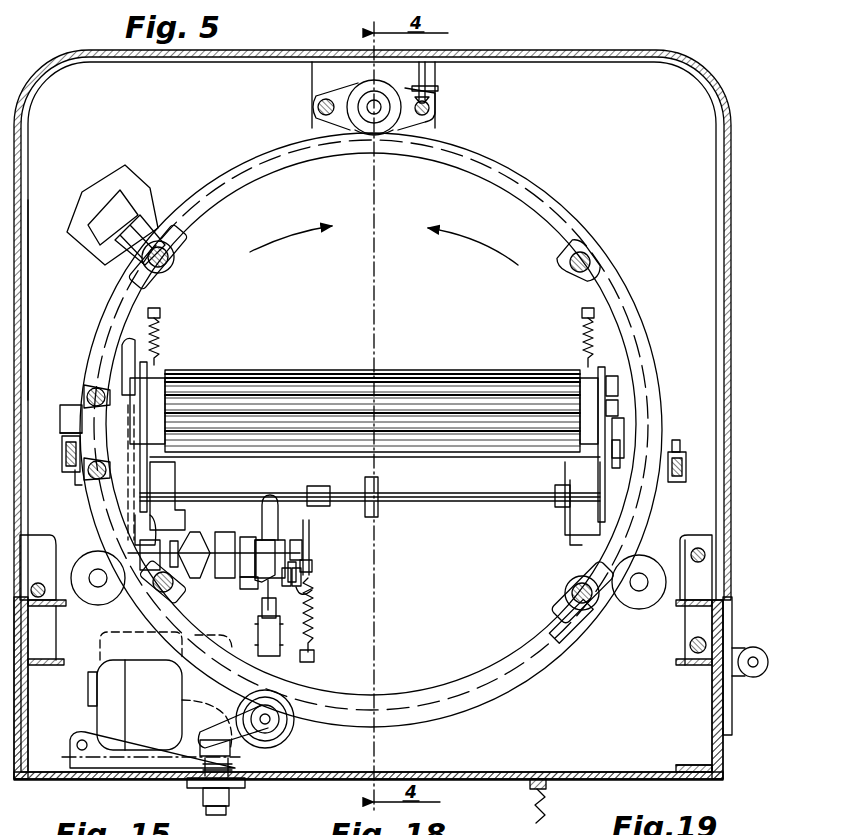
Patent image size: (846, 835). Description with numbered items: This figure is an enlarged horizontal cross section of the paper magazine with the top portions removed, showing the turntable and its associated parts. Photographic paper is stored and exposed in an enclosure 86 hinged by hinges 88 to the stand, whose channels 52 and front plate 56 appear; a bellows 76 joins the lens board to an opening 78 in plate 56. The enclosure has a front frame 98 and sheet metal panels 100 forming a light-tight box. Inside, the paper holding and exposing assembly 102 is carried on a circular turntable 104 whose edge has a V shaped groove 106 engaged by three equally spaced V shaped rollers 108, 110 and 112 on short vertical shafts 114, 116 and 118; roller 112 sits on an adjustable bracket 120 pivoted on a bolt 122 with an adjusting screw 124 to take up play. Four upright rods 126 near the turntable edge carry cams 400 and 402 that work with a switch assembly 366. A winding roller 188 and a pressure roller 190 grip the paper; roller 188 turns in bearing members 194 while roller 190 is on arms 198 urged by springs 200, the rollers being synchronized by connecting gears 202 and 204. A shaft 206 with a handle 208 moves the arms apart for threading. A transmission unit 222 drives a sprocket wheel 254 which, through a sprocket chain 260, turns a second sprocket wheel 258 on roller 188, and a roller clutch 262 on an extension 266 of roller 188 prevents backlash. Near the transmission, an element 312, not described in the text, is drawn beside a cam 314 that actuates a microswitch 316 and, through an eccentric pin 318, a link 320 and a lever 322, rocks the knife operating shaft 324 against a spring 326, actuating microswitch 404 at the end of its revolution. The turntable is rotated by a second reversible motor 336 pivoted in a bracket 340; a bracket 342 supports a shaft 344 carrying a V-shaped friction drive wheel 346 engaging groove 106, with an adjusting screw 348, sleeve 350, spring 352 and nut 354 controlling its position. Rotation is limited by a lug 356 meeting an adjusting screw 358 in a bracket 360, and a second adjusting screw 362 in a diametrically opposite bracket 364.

The channels 52 is at (22, 700).
The front plate 56 is at (176, 780).
The bellows 76 is at (521, 801).
The opening 78 is at (312, 780).
The enclosure 86 is at (745, 330).
The hinges 88 is at (753, 658).
The front frame 98 is at (60, 605).
The sheet metal panels 100 is at (29, 290).
The paper holding and exposing assembly 102 is at (596, 206).
The turntable 104 is at (492, 219).
The V shaped groove 106 is at (473, 693).
The V shaped roller 108 is at (95, 575).
The V shaped roller 110 is at (640, 572).
The V shaped roller 112 is at (395, 130).
The vertical shaft 114 is at (100, 583).
The vertical shaft 116 is at (638, 586).
The vertical shaft 118 is at (368, 100).
The adjustable bracket 120 is at (322, 102).
The bolt 122 is at (318, 110).
The adjusting screw 124 is at (428, 80).
The rods 126 is at (168, 258).
The winding roller 188 is at (408, 442).
The pressure roller 190 is at (448, 410).
The bearing members 194 is at (150, 452).
The arms 198 is at (148, 392).
The springs 200 is at (160, 338).
The connecting gear 202 is at (605, 402).
The connecting gear 204 is at (612, 430).
The shaft 206 is at (286, 370).
The handle 208 is at (126, 345).
The transmission unit 222 is at (232, 598).
The sprocket wheel 254 is at (162, 515).
The second sprocket wheel 258 is at (125, 415).
The sprocket chain 260 is at (128, 508).
The roller clutch 262 is at (612, 445).
The extension 266 is at (562, 467).
The slide block 312 is at (260, 636).
The cam 314 is at (295, 545).
The microswitch 316 is at (286, 580).
The eccentric pin 318 is at (308, 565).
The link 320 is at (302, 548).
The lever 322 is at (320, 494).
The knife operating shaft 324 is at (458, 498).
The spring 326 is at (316, 625).
The second reversible motor 336 is at (105, 684).
The bracket 340 is at (84, 740).
The bracket 342 is at (270, 725).
The shaft 344 is at (270, 712).
The V-shaped friction drive wheel 346 is at (290, 728).
The adjusting screw 348 is at (228, 812).
The sleeve 350 is at (228, 798).
The spring 352 is at (220, 768).
The nut 354 is at (215, 725).
The lug 356 is at (68, 430).
The adjusting screw 358 is at (55, 445).
The bracket 360 is at (75, 470).
The second adjusting screw 362 is at (685, 444).
The bracket 364 is at (682, 476).
The switch assembly 366 is at (138, 178).
The cam 400 is at (152, 222).
The cam 402 is at (572, 622).
The microswitch 404 is at (310, 590).